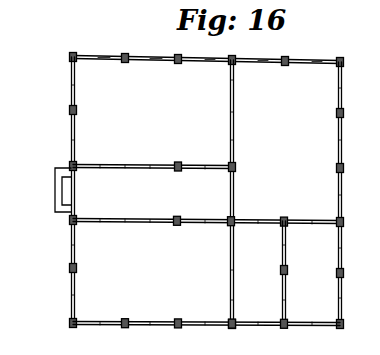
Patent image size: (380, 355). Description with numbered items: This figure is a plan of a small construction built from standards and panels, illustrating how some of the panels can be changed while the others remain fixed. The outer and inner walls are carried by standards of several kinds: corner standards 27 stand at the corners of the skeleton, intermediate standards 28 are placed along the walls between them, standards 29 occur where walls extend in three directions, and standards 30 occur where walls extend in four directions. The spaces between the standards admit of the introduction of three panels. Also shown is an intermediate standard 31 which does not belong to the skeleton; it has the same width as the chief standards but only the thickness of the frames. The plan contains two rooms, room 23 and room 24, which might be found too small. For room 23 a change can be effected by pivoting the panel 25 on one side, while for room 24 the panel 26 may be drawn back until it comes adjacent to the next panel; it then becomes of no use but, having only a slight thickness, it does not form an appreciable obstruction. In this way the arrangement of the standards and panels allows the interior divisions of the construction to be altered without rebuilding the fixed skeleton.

The room 23 is at (152, 141).
The room 24 is at (322, 195).
The panel 25 is at (234, 138).
The panel 26 is at (287, 268).
The corner standards 27 is at (76, 55).
The intermediate standards 28 is at (69, 108).
The standards from which walls extend in three directions 29 is at (69, 164).
The standards from which walls extend in four directions 30 is at (227, 224).
The intermediate standard 31 is at (123, 223).